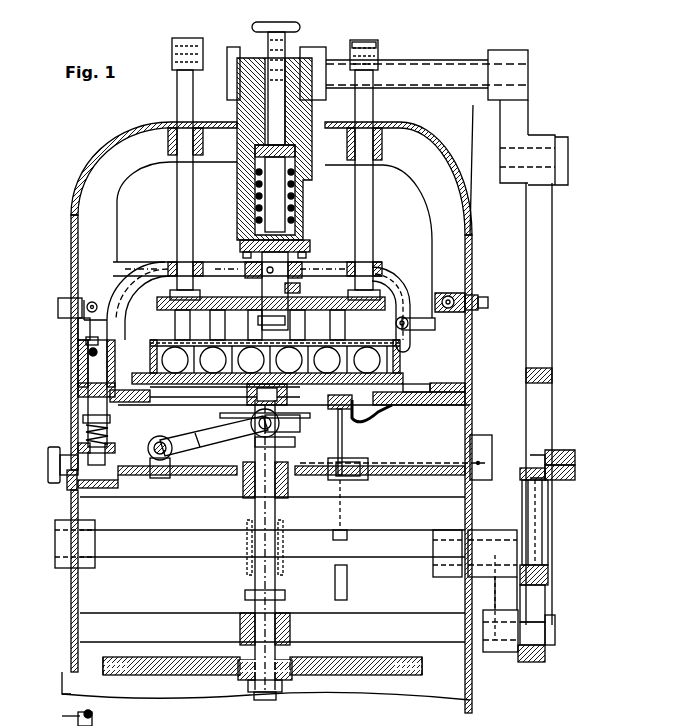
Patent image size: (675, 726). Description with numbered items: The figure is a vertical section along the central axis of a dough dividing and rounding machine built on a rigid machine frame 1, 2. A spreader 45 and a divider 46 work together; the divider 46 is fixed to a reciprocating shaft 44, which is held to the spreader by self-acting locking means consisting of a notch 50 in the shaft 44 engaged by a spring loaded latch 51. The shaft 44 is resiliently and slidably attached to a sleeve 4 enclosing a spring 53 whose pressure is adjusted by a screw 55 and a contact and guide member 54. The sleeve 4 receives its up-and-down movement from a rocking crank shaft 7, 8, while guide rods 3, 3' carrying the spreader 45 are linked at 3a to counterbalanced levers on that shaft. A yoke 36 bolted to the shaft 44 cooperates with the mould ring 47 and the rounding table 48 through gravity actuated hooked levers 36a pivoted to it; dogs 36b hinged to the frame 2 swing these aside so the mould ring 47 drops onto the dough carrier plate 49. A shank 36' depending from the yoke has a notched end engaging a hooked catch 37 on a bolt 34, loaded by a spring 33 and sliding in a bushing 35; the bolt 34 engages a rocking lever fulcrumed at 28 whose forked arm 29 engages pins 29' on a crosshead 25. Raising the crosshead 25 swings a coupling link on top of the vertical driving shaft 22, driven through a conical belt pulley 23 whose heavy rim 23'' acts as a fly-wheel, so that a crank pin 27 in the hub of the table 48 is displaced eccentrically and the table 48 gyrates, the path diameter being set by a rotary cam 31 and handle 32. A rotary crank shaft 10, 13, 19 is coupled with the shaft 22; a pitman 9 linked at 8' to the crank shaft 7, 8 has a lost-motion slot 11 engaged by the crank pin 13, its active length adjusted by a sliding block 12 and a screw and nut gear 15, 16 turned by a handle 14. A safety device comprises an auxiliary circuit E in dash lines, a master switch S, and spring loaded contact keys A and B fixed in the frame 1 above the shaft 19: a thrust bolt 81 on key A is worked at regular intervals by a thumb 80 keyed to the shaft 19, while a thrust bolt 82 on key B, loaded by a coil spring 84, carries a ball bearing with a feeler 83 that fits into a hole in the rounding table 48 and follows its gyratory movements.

The machine frame 1 is at (72, 400).
The machine frame 2 is at (90, 182).
The guide rod 3 is at (177, 169).
The guide rod 3' is at (374, 170).
The link of guide rods 3a is at (355, 50).
The sleeve 4 is at (247, 192).
The rocking crank shaft 7 is at (400, 72).
The rocking crank shaft 8 is at (527, 126).
The pitman link 8' is at (548, 148).
The pitman 9 is at (546, 298).
The rotary crank shaft 10 is at (510, 640).
The lost-motion section 11 is at (535, 607).
The sliding block 12 is at (548, 584).
The crank pin 13 is at (535, 632).
The handle 14 is at (572, 458).
The nut 15 is at (560, 482).
The screw 16 is at (536, 523).
The rotary shaft 19 is at (260, 581).
The rotary driving shaft 22 is at (252, 515).
The conical belt pulley 23 is at (262, 691).
The heavy rim 23'' is at (467, 686).
The crosshead 25 is at (228, 418).
The crank pin 27 is at (250, 396).
The fulcrum of rocking lever 28 is at (160, 437).
The forked arm 29 is at (209, 449).
The pins 29' is at (280, 432).
The rotary cam 31 is at (66, 476).
The handle 32 is at (48, 462).
The spring 33 is at (84, 431).
The bolt 34 is at (100, 365).
The bushing 35 is at (78, 375).
The yoke 36 is at (247, 255).
The shank 36' is at (92, 494).
The bell crank levers 36a is at (410, 345).
The dogs 36b is at (440, 302).
The hooked catch 37 is at (88, 348).
The reciprocating shaft 44 is at (290, 262).
The spreader 45 is at (345, 345).
The divider 46 is at (436, 298).
The mould ring 47 is at (392, 358).
The rounding table 48 is at (455, 388).
The dough carrier plate 49 is at (430, 368).
The notch 50 is at (278, 325).
The spring loaded latch 51 is at (300, 291).
The spring 53 is at (295, 205).
The contact and guide member 54 is at (297, 155).
The screw 55 is at (270, 55).
The thumb 80 is at (338, 587).
The thrust bolt 81 is at (358, 500).
The thrust bolt 82 is at (338, 440).
The feeler 83 is at (336, 408).
The coil spring 84 is at (360, 420).
The contact key A is at (360, 495).
The contact key B is at (360, 466).
The auxiliary electric circuit E is at (420, 470).
The master switch S is at (485, 444).